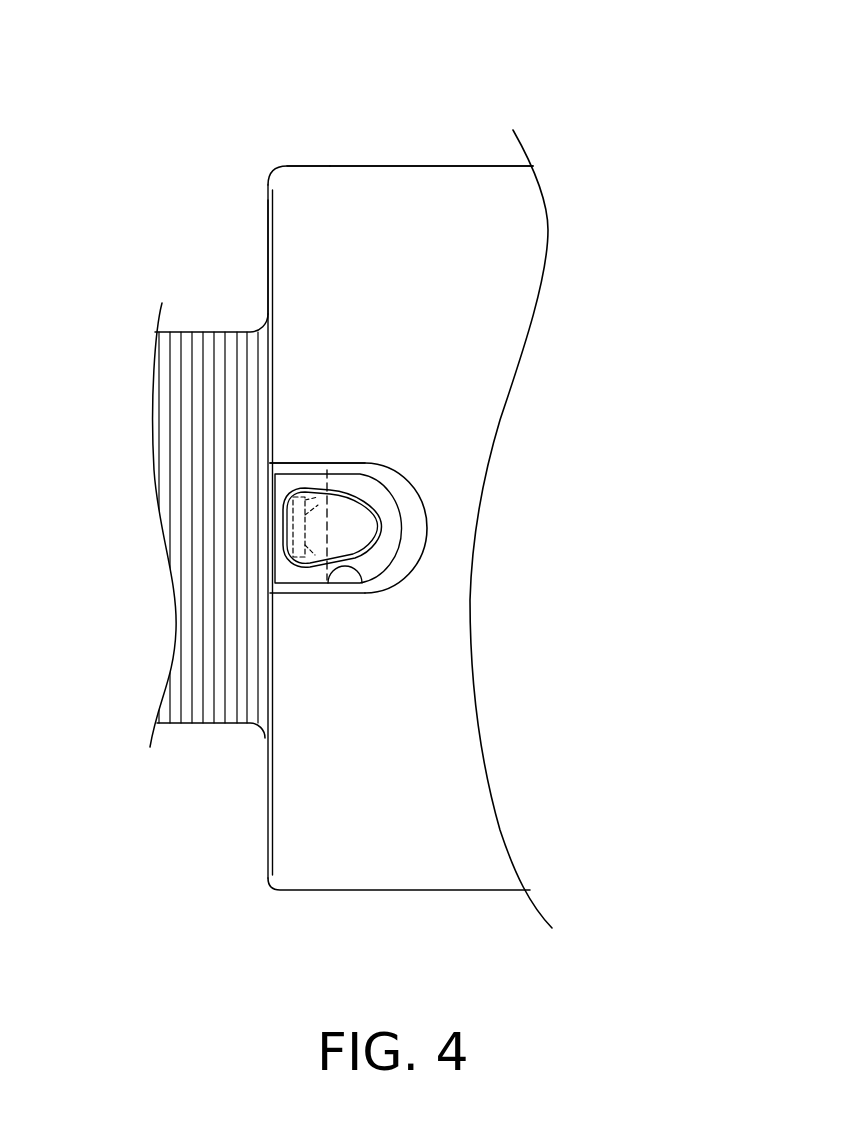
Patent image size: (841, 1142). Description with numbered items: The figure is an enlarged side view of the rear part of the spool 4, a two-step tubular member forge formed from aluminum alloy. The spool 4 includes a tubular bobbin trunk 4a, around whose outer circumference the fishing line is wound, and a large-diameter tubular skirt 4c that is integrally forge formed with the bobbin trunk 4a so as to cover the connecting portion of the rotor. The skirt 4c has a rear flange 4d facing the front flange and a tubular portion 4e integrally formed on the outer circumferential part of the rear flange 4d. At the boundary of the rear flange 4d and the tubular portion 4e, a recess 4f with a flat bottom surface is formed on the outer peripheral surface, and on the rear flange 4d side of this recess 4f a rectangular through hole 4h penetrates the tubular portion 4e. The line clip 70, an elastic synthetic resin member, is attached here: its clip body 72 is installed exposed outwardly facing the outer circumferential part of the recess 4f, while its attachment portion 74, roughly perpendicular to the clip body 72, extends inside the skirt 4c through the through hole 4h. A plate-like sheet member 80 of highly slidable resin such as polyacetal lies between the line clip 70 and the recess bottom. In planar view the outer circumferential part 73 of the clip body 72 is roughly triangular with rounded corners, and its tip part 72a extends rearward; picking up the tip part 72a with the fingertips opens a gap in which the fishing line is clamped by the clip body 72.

The spool 4 is at (190, 153).
The bobbin trunk 4a is at (173, 723).
The skirt 4c is at (399, 160).
The rear flange 4d is at (268, 266).
The tubular portion 4e is at (322, 166).
The recess 4f is at (330, 593).
The through hole 4h is at (313, 583).
The line clip 70 is at (308, 456).
The clip body 72 is at (366, 494).
The tip part 72a is at (383, 528).
The outer circumferential part 73 is at (417, 560).
The attachment portion 74 is at (327, 480).
The sheet member 80 is at (377, 492).